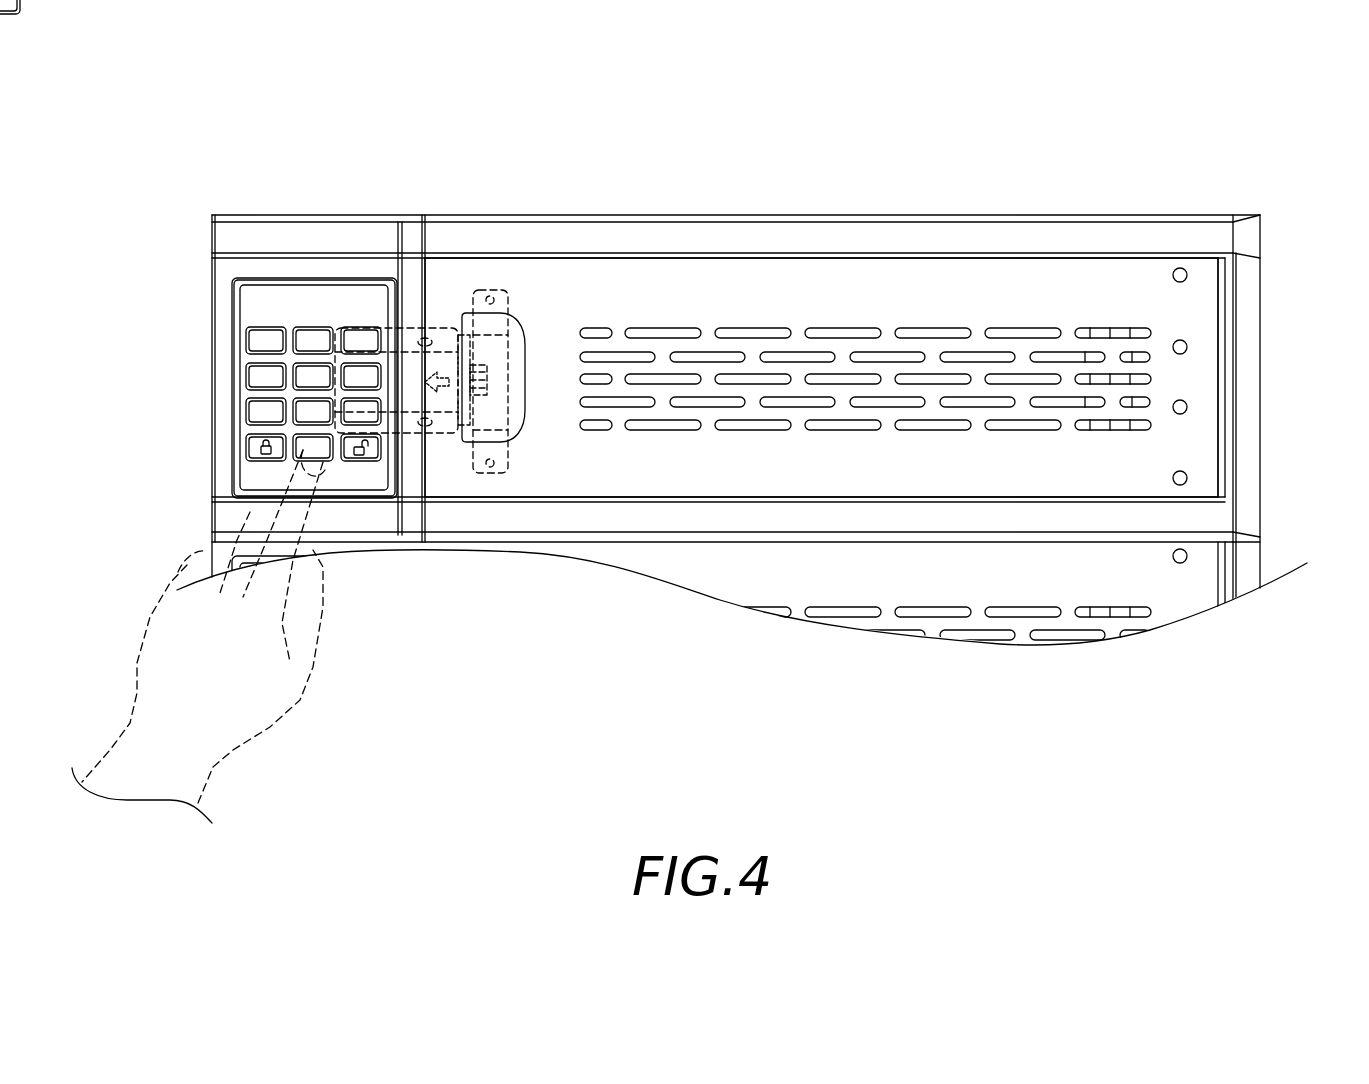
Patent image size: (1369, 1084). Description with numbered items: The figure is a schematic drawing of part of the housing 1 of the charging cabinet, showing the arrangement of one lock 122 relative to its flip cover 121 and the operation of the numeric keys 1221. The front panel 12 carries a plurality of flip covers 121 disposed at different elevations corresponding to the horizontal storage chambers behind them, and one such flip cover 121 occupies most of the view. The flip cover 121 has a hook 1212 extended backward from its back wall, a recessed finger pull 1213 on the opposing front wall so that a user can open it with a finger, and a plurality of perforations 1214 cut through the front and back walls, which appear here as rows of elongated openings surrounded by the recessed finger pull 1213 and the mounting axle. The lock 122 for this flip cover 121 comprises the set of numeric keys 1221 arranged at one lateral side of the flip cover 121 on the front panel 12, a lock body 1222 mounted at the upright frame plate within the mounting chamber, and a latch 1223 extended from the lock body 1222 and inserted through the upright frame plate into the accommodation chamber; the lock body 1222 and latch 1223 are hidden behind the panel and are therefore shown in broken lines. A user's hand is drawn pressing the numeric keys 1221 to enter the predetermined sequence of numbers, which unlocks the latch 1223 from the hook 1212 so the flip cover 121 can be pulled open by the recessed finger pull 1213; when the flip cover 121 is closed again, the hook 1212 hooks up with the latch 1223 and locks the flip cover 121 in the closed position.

The housing 1 is at (1113, 188).
The front panel 12 is at (1248, 300).
The flip cover 121 is at (968, 275).
The hook 1212 is at (478, 352).
The recessed finger pull 1213 is at (518, 321).
The perforations 1214 is at (837, 327).
The lock 122 is at (230, 340).
The numeric keys 1221 is at (256, 332).
The lock body 1222 is at (383, 358).
The latch 1223 is at (458, 365).